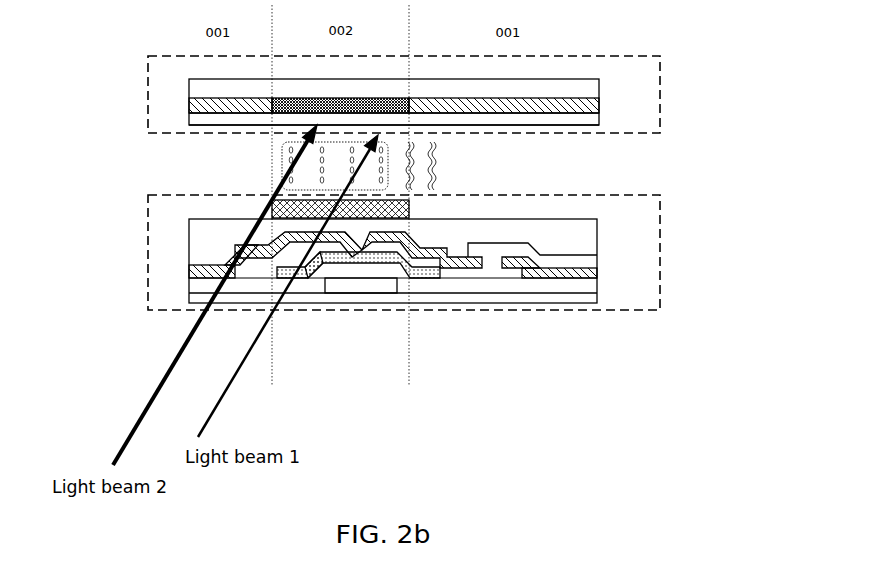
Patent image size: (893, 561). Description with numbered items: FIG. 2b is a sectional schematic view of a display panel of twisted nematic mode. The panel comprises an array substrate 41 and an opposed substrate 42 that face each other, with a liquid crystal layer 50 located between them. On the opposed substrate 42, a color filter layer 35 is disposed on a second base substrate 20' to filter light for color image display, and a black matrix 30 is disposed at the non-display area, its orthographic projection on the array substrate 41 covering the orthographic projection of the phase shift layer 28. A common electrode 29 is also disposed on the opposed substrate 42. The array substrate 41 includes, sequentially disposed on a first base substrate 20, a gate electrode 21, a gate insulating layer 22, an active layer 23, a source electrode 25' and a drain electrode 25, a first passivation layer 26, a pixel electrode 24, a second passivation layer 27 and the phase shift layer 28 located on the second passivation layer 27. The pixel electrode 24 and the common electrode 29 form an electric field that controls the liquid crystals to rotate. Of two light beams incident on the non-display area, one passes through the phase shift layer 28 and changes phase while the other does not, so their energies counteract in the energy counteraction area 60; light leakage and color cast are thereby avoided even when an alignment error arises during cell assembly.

The opposed substrate 42 is at (660, 78).
The second base substrate 20' is at (464, 102).
The color filter layer 35 is at (203, 107).
The black matrix 30 is at (285, 115).
The common electrode 29 is at (573, 119).
The energy counteraction area 60 is at (280, 155).
The liquid crystal layer 50 is at (418, 183).
The array substrate 41 is at (660, 298).
The phase shift layer 28 is at (413, 211).
The second passivation layer 27 is at (512, 222).
The first base substrate 20 is at (393, 317).
The gate electrode 21 is at (361, 285).
The gate insulating layer 22 is at (423, 270).
The active layer 23 is at (308, 272).
The first passivation layer 26 is at (212, 268).
The source electrode 25' is at (292, 285).
The drain electrode 25 is at (422, 286).
The pixel electrode 24 is at (563, 263).